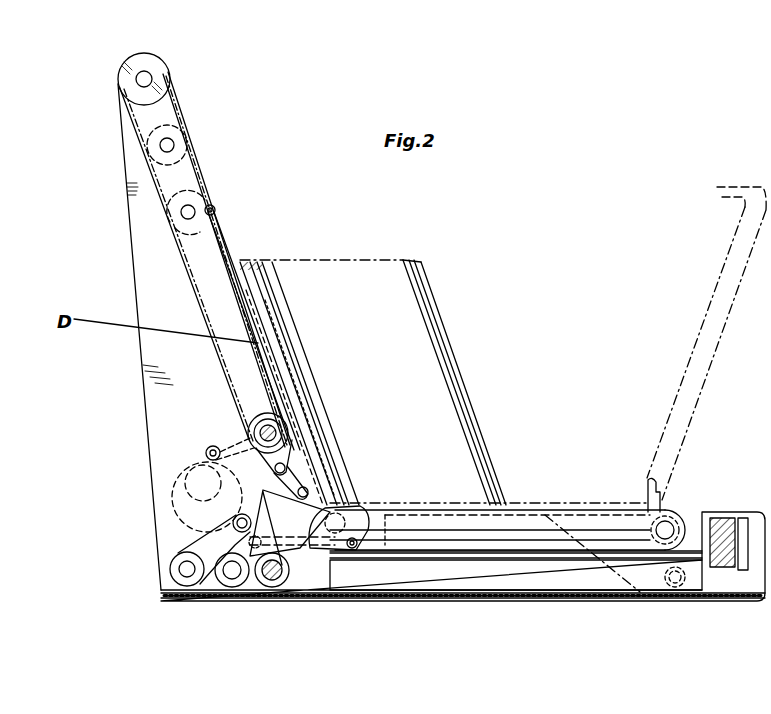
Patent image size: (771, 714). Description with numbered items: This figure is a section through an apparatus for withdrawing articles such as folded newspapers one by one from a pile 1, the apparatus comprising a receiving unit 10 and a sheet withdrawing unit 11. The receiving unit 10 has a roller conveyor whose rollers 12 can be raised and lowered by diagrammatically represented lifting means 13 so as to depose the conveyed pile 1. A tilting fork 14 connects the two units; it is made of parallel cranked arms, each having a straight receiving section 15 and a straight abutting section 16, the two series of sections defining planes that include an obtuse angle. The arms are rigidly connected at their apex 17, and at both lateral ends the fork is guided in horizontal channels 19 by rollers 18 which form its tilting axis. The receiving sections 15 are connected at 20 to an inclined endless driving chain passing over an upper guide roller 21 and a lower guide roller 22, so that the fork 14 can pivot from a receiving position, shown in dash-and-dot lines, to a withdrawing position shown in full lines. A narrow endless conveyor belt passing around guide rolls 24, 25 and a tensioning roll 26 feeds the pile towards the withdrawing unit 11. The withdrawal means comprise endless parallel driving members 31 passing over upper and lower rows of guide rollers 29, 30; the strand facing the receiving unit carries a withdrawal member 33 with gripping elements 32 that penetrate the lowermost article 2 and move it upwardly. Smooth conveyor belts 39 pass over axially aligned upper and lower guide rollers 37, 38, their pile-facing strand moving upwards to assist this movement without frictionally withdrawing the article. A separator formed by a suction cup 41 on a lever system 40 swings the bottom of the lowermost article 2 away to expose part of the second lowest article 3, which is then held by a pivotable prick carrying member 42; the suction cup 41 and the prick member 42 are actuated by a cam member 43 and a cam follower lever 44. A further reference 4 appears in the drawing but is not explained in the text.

The pile 1 is at (364, 260).
The lowermost article 2 is at (243, 262).
The second lowest article 3 is at (253, 262).
The rail 4 is at (265, 262).
The receiving unit 10 is at (560, 470).
The sheet withdrawing unit 11 is at (122, 228).
The rollers 12 is at (392, 556).
The lifting means 13 is at (722, 568).
The tilting fork 14 is at (698, 342).
The receiving section 15 is at (228, 244).
The abutting section 16 is at (608, 510).
The apex 17 is at (262, 584).
The rollers 18 is at (276, 585).
The horizontal channels 19 is at (490, 598).
The connection point 20 is at (216, 210).
The upper guide roller 21 is at (196, 204).
The lower guide roller 22 is at (306, 548).
The guide roll 24 is at (670, 518).
The guide roll 25 is at (176, 570).
The tensioning roll 26 is at (232, 588).
The upper guide rollers 29 is at (182, 138).
The lower guide rollers 30 is at (264, 420).
The endless driving members 31 is at (198, 165).
The gripping elements 32 is at (276, 352).
The withdrawal member 33 is at (255, 312).
The upper guide roller 37 is at (158, 67).
The lower guide roller 38 is at (250, 420).
The conveyor belts 39 is at (180, 92).
The lever system 40 is at (286, 470).
The suction cup 41 is at (310, 490).
The prick carrying member 42 is at (348, 520).
The cam member 43 is at (200, 508).
The cam follower lever 44 is at (225, 446).